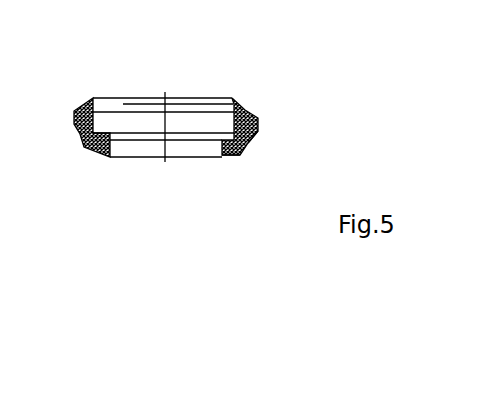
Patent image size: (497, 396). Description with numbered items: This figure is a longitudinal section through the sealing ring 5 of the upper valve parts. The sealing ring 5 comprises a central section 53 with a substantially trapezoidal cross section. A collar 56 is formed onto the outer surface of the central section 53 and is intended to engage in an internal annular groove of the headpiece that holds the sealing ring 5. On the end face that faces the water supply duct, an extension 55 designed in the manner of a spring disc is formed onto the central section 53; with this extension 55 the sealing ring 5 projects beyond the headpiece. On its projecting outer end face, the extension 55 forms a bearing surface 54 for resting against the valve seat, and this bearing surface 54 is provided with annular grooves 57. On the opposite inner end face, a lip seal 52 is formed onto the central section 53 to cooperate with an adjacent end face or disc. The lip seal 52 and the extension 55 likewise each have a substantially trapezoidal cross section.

The sealing ring 5 is at (224, 103).
The lip seal 52 is at (244, 110).
The central section 53 is at (256, 132).
The bearing surface 54 is at (238, 152).
The extension 55 is at (110, 157).
The collar 56 is at (258, 125).
The annular grooves 57 is at (85, 152).